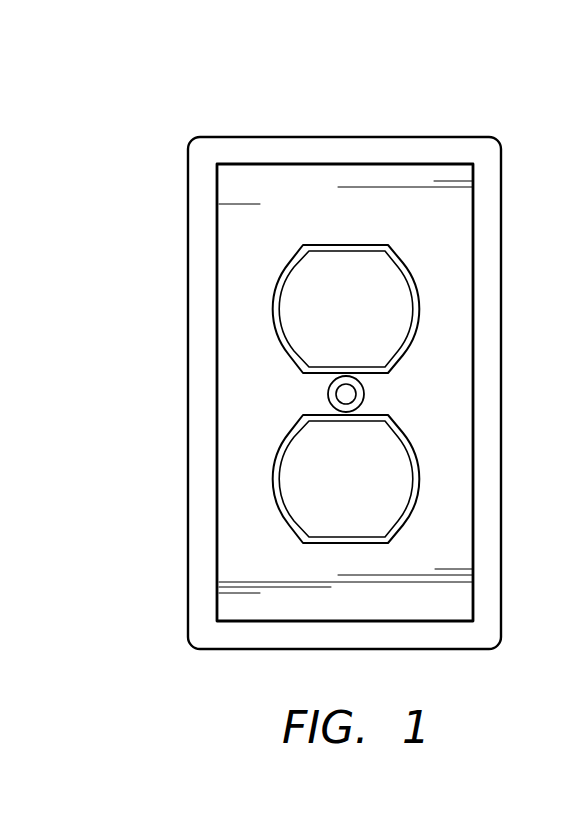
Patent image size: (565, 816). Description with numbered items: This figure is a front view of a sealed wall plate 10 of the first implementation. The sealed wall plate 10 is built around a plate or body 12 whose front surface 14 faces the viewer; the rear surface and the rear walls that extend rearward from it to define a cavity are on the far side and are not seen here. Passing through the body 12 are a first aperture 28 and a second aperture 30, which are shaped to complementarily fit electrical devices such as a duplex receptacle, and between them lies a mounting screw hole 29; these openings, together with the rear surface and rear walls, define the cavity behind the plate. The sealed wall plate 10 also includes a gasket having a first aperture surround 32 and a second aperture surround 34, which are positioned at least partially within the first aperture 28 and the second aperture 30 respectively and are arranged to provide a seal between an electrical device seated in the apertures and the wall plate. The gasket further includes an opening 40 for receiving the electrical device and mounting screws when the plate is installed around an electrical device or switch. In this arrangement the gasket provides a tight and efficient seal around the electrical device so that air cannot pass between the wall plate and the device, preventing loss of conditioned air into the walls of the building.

The sealed wall plate 10 is at (343, 352).
The body 12 is at (230, 94).
The front surface 14 is at (246, 259).
The first aperture 28 is at (318, 326).
The mounting screw hole 29 is at (336, 397).
The second aperture 30 is at (310, 512).
The first aperture surround 32 is at (275, 293).
The second aperture surround 34 is at (274, 481).
The opening 40 is at (403, 340).